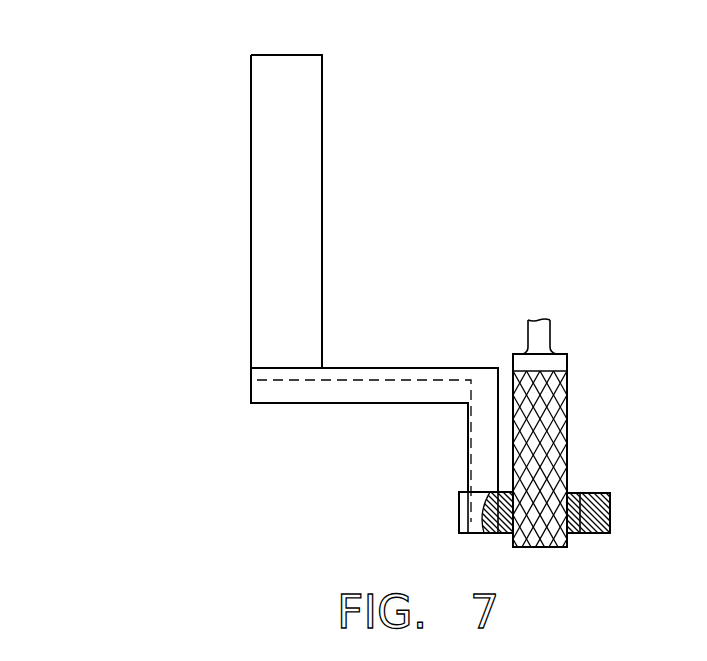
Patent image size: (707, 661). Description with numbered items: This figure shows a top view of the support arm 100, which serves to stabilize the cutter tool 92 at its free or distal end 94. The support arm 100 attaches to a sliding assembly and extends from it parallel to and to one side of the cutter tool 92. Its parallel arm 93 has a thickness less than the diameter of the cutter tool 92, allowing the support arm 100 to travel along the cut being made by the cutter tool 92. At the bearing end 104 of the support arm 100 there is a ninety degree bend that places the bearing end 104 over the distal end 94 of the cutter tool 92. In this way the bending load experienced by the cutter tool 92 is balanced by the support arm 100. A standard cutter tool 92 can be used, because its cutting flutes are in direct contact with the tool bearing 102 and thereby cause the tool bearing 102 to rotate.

The support arm 100 is at (448, 230).
The cutter tool 92 is at (567, 412).
The parallel arm 93 is at (468, 458).
The distal end 94 is at (548, 550).
The tool bearing 102 is at (585, 492).
The bearing end 104 is at (598, 525).